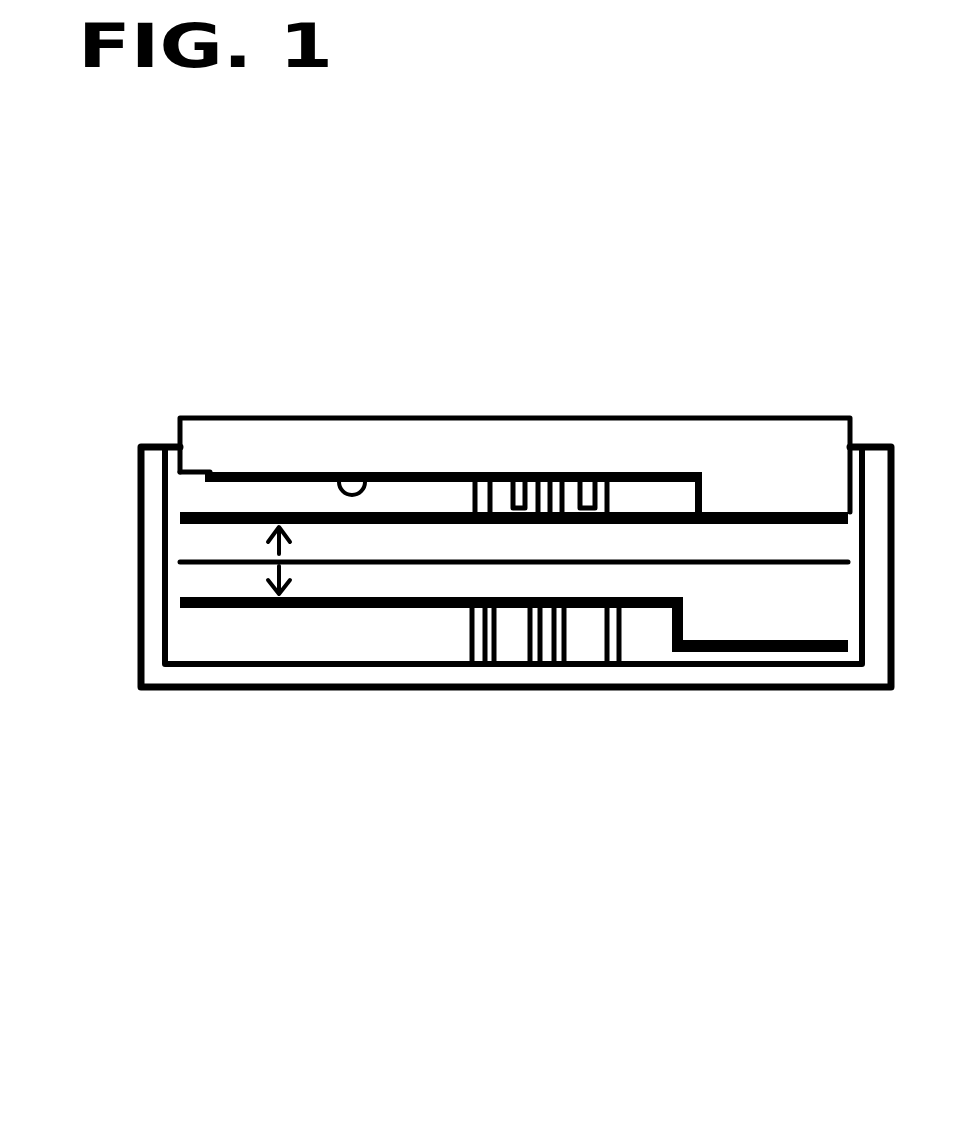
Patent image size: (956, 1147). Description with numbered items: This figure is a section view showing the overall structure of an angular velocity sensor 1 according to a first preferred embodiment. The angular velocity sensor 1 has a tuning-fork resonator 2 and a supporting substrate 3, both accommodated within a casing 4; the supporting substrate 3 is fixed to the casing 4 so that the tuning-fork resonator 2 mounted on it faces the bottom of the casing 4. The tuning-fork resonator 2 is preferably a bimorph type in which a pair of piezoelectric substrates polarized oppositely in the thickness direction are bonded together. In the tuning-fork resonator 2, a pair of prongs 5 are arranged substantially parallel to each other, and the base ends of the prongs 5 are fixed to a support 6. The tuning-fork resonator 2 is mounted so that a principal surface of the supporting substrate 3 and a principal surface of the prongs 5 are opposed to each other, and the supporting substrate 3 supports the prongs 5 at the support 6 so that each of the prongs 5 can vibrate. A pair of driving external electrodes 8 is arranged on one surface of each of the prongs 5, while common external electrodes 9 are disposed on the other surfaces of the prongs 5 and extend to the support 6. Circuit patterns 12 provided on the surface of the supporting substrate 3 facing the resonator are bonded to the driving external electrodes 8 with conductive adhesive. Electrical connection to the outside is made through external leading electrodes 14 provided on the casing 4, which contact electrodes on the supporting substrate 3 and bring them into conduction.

The angular velocity sensor 1 is at (142, 400).
The tuning-fork resonator 2 is at (833, 875).
The supporting substrate 3 is at (605, 418).
The casing 4 is at (440, 688).
The prongs 5 is at (633, 582).
The support 6 is at (773, 603).
The driving external electrodes 8 is at (258, 512).
The common external electrodes 9 is at (340, 610).
The circuit patterns 12 is at (378, 472).
The external leading electrodes 14 is at (573, 472).